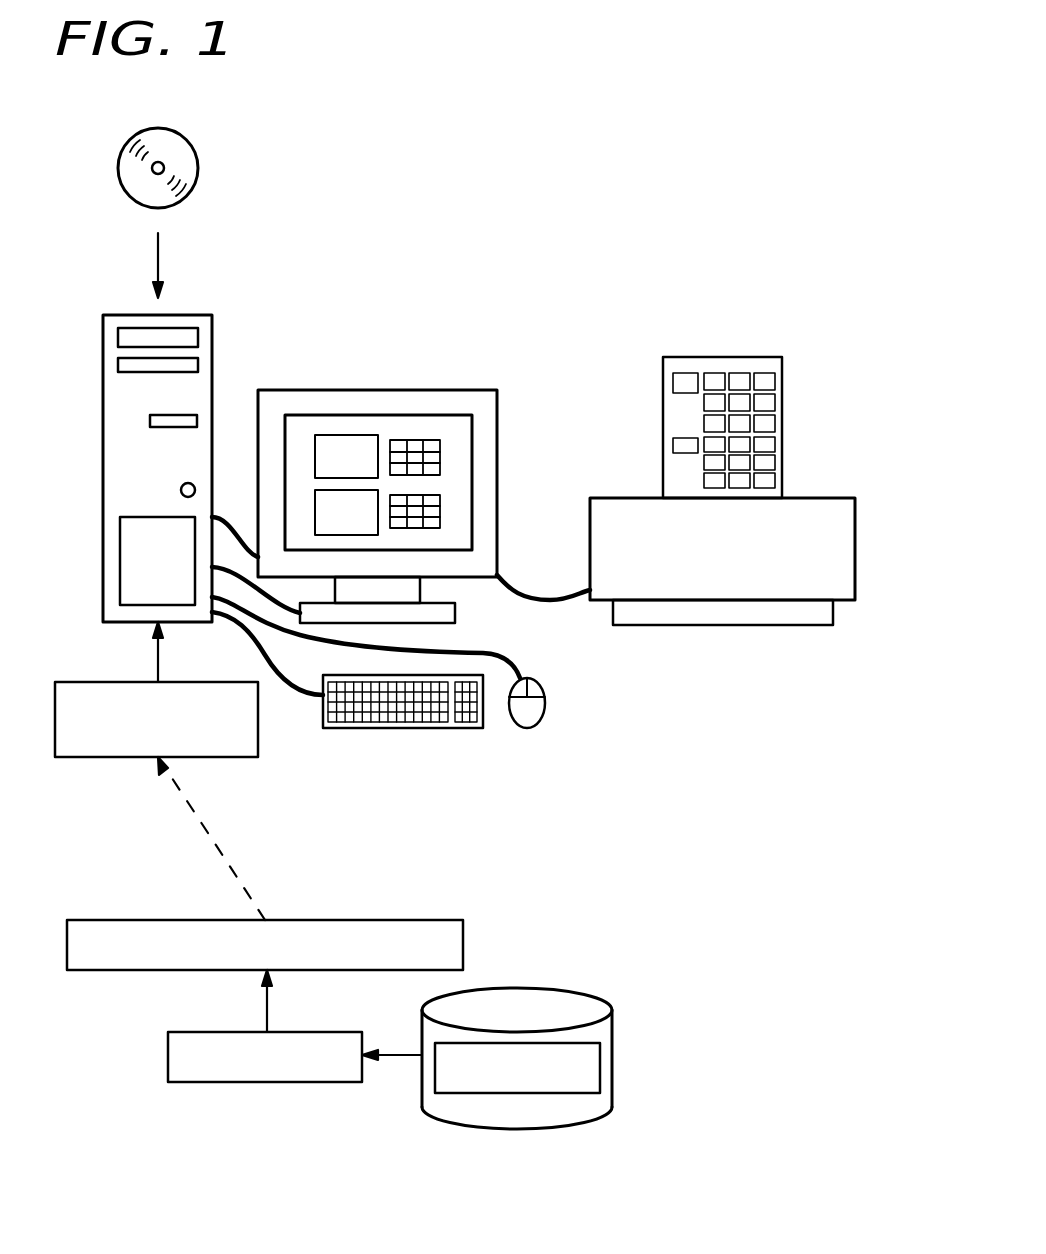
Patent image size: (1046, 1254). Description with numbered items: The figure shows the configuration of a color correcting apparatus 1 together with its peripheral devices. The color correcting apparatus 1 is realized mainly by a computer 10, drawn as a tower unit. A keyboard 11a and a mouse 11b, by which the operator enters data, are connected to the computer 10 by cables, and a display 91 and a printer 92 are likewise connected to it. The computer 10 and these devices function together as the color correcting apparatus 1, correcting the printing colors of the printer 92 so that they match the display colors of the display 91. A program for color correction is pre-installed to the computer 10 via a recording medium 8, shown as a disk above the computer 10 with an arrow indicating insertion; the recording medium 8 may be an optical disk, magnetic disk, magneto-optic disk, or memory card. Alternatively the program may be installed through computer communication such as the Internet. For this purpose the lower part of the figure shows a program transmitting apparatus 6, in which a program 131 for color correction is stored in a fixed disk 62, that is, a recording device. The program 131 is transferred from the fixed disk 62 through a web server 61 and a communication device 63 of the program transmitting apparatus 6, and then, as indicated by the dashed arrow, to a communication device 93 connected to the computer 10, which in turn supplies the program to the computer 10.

The color correcting apparatus 1 is at (303, 286).
The program transmitting apparatus 6 is at (605, 922).
The recording medium 8 is at (198, 168).
The computer 10 is at (212, 352).
The keyboard 11a is at (373, 728).
The mouse 11b is at (528, 728).
The display 91 is at (413, 383).
The printer 92 is at (817, 498).
The communication device 93 is at (258, 740).
The web server 61 is at (330, 1032).
The fixed disk 62 is at (612, 1032).
The communication device 63 is at (463, 945).
The program 131 is at (600, 1072).